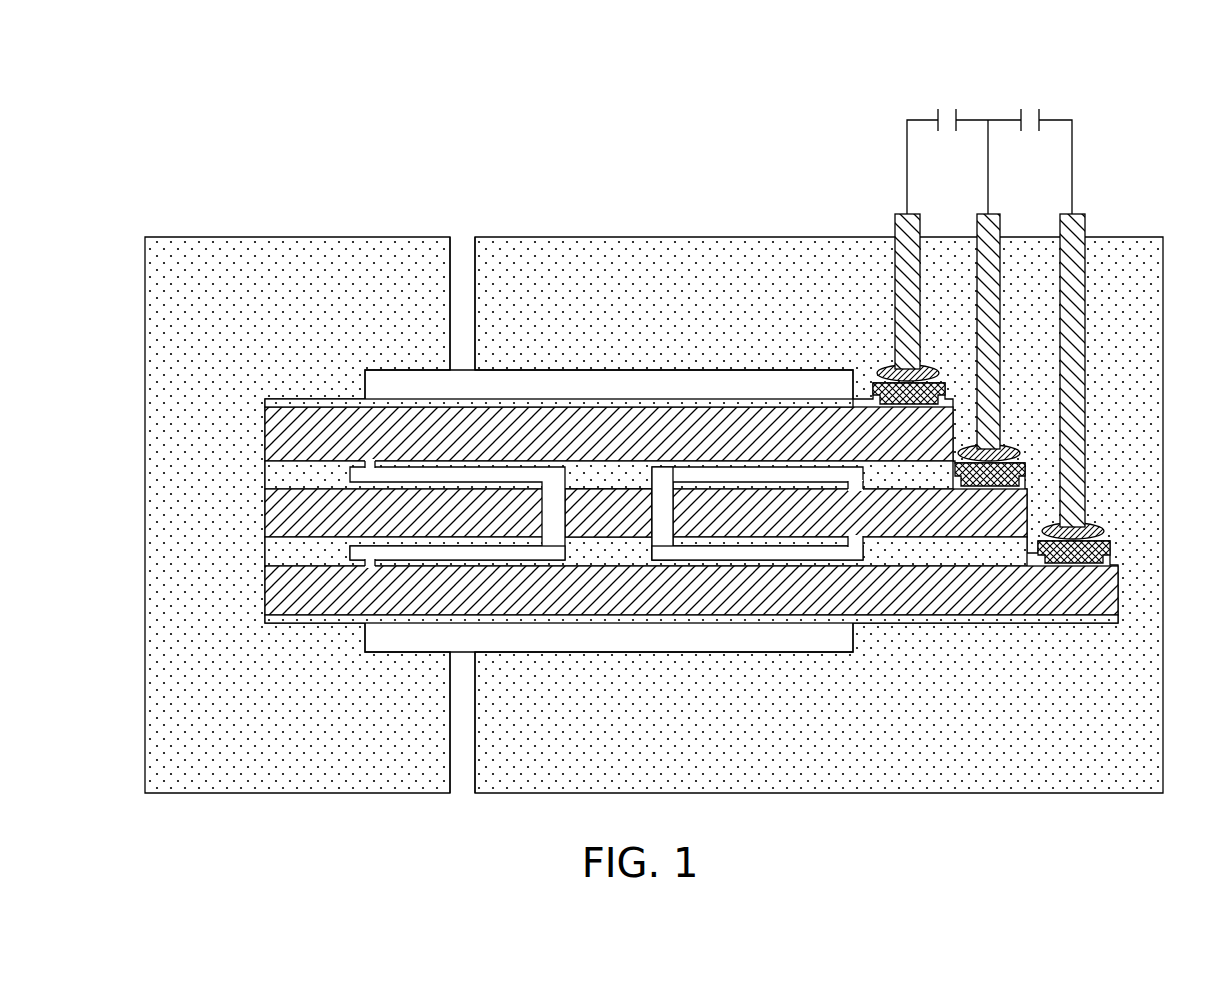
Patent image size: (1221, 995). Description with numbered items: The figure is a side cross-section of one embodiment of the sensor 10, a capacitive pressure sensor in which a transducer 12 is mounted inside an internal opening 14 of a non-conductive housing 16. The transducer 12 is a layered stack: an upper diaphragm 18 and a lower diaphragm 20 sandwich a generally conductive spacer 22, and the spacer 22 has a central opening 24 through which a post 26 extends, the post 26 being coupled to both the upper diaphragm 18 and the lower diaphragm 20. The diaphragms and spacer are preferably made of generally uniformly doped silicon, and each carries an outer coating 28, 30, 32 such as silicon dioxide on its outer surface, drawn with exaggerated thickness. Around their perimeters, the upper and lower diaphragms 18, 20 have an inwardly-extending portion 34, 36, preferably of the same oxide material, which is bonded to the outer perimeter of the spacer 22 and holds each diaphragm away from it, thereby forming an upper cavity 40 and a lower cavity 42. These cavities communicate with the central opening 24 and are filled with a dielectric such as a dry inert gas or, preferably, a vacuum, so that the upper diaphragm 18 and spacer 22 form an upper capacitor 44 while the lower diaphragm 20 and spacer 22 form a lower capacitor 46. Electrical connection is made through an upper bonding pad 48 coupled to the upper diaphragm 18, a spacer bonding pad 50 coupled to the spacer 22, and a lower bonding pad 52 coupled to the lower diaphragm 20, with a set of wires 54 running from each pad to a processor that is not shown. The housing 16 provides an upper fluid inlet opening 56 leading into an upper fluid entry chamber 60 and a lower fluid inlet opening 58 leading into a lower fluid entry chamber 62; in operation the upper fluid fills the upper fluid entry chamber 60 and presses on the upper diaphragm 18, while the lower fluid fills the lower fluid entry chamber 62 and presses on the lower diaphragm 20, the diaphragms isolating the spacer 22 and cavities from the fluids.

The sensor 10 is at (117, 815).
The transducer 12 is at (241, 587).
The internal opening 14 is at (645, 636).
The non-conductive housing 16 is at (193, 392).
The upper diaphragm 18 is at (265, 425).
The lower diaphragm 20 is at (265, 608).
The spacer 22 is at (265, 505).
The central opening 24 is at (661, 510).
The post 26 is at (603, 487).
The outer coating 28 is at (798, 462).
The outer coating 30 is at (427, 477).
The outer coating 32 is at (378, 626).
The inwardly-extending portion 34 is at (265, 477).
The inwardly-extending portion 36 is at (265, 552).
The upper cavity 40 is at (375, 473).
The lower cavity 42 is at (493, 549).
The upper capacitor 44 is at (947, 112).
The lower capacitor 46 is at (1030, 110).
The upper bonding pad 48 is at (947, 393).
The spacer bonding pad 50 is at (1027, 471).
The lower bonding pad 52 is at (1116, 548).
The wires 54 is at (920, 226).
The upper fluid inlet opening 56 is at (458, 253).
The lower fluid inlet opening 58 is at (465, 793).
The upper fluid entry chamber 60 is at (408, 381).
The lower fluid entry chamber 62 is at (565, 642).